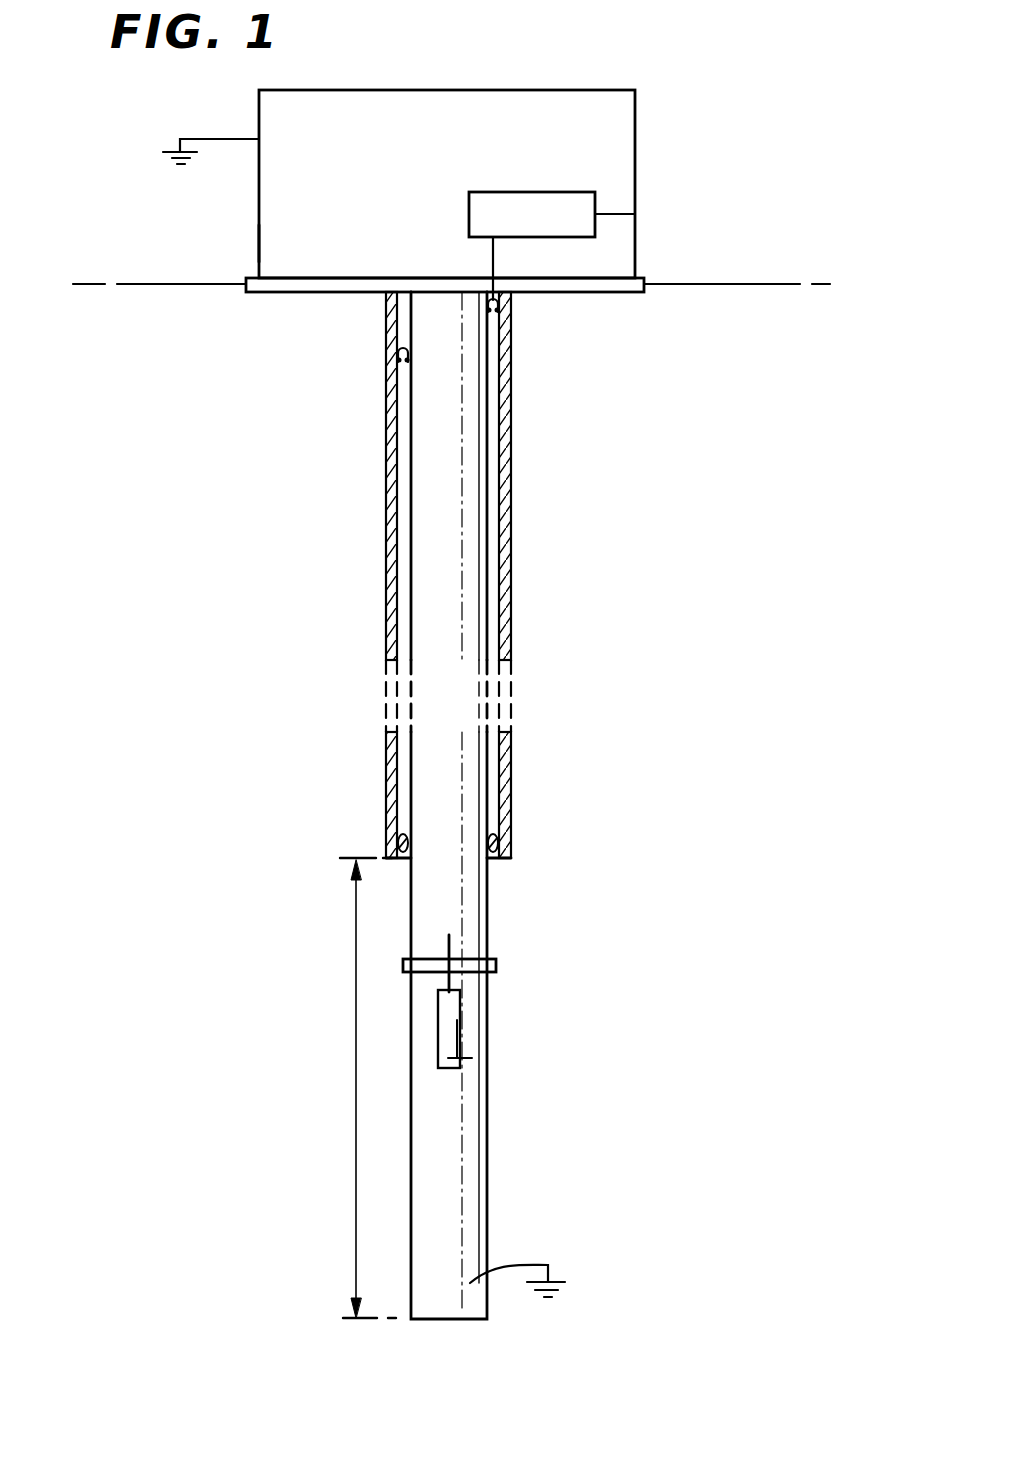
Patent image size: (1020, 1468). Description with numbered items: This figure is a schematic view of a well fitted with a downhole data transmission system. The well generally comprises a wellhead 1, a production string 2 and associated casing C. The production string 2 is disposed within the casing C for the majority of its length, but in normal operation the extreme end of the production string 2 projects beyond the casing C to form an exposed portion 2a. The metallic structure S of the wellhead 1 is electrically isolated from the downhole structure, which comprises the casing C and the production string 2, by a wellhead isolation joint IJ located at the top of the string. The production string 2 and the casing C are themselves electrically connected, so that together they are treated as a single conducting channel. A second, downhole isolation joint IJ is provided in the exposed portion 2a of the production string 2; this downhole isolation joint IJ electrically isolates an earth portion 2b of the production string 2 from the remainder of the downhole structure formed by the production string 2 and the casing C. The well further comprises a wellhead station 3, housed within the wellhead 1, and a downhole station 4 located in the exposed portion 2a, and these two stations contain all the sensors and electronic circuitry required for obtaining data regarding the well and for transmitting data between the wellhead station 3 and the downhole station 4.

The wellhead 1 is at (488, 110).
The production string 2 is at (448, 487).
The exposed portion 2a is at (355, 1093).
The earth portion 2b is at (470, 1108).
The wellhead station 3 is at (565, 207).
The downhole station 4 is at (452, 1028).
The casing C is at (507, 607).
The isolation joint IJ is at (640, 283).
The metallic structure S is at (259, 244).